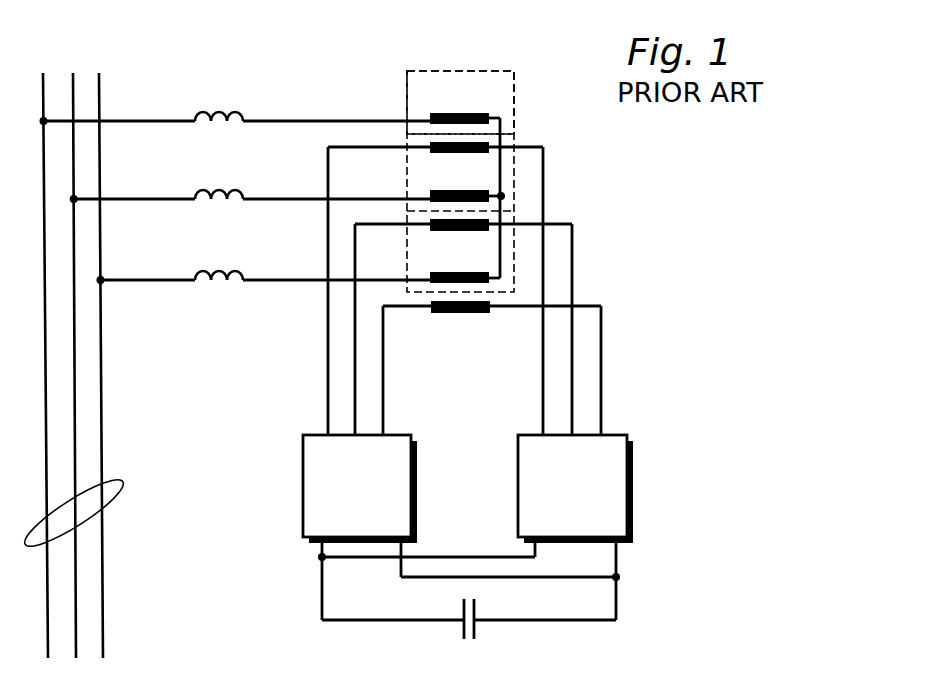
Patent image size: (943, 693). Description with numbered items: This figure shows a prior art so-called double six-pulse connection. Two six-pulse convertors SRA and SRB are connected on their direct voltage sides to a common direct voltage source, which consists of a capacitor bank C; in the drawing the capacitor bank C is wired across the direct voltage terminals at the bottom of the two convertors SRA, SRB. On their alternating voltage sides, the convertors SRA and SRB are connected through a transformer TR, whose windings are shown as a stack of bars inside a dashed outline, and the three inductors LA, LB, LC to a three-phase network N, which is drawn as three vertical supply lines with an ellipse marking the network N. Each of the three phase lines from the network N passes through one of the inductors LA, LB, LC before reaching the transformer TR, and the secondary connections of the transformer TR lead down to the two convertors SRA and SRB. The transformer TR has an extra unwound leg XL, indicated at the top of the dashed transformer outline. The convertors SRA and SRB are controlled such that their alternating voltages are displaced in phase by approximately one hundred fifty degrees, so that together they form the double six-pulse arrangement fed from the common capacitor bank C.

The three-phase network N is at (122, 482).
The inductor LA is at (223, 109).
The inductor LB is at (223, 187).
The inductor LC is at (223, 269).
The transformer TR is at (517, 101).
The extra unwound leg XL is at (462, 70).
The six-pulse convertor SRA is at (367, 528).
The six-pulse convertor SRB is at (585, 528).
The capacitor bank C is at (478, 628).